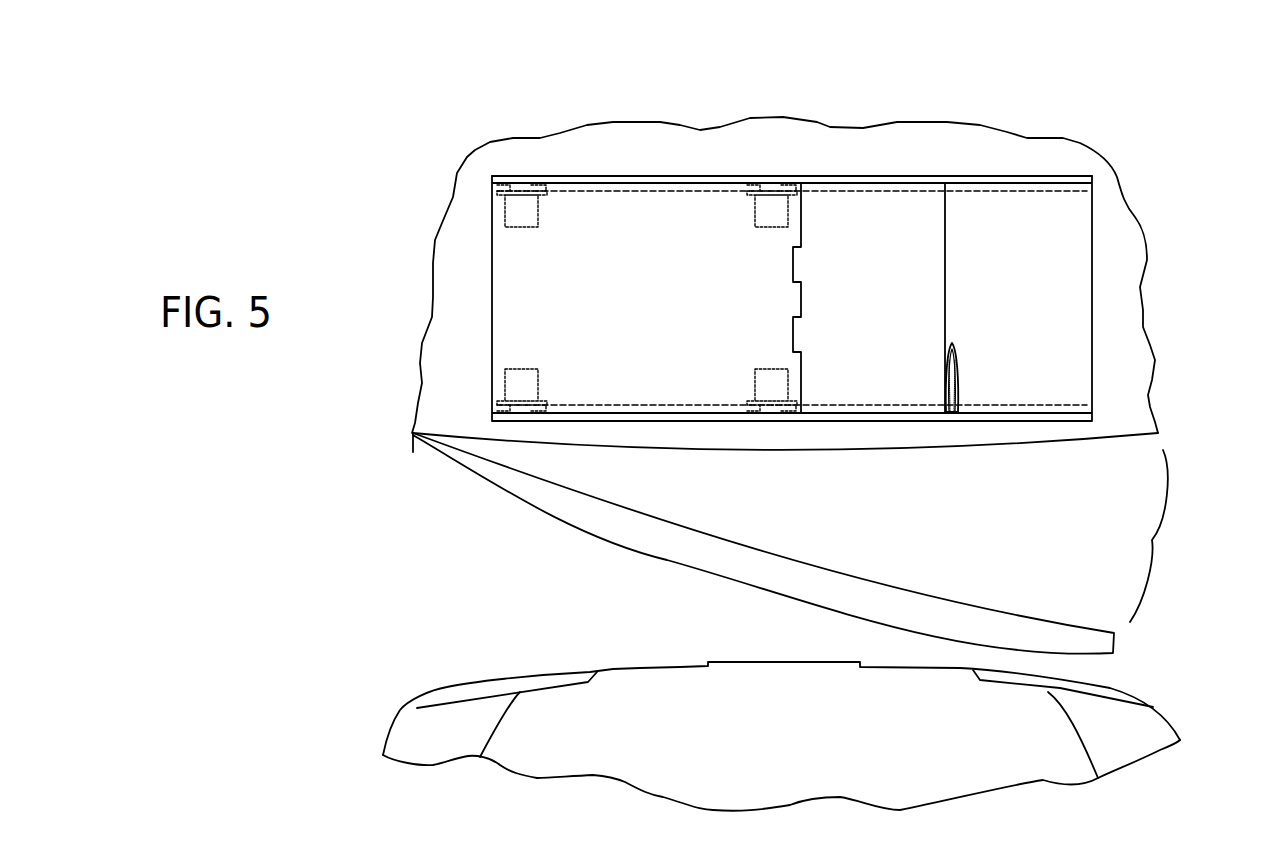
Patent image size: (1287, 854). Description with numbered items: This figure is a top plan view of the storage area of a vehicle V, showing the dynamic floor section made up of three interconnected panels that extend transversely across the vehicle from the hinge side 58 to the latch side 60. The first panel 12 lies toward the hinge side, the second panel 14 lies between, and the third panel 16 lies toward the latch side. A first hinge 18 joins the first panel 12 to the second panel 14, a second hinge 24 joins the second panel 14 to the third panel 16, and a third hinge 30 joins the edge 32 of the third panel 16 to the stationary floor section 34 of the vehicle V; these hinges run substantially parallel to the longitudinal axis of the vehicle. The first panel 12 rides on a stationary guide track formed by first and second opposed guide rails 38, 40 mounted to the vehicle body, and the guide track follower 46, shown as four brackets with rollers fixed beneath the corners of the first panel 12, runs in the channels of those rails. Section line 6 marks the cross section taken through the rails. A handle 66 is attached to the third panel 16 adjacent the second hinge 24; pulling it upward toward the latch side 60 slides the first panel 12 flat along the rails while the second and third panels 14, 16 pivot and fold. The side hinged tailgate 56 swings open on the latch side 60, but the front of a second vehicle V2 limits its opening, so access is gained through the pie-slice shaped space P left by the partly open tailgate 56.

The section line 6- 6 is at (476, 166).
The first panel 12 is at (661, 301).
The second panel 14 is at (886, 301).
The third panel 16 is at (1041, 301).
The first hinge 18 is at (800, 239).
The second hinge 24 is at (945, 222).
The third hinge 30 is at (1092, 312).
The edge of the third panel 32 is at (1078, 220).
The stationary floor section 34 is at (1126, 238).
The first guide rail 38 is at (690, 190).
The second guide rail 40 is at (598, 408).
The guide track follower 46 is at (494, 212).
The tailgate 56 is at (760, 548).
The hinge side 58 is at (413, 433).
The latch side 60 is at (1152, 387).
The handle 66 is at (959, 366).
The vehicle V is at (1015, 131).
The second vehicle V2 is at (660, 665).
The pie-slice shaped space P is at (1156, 536).